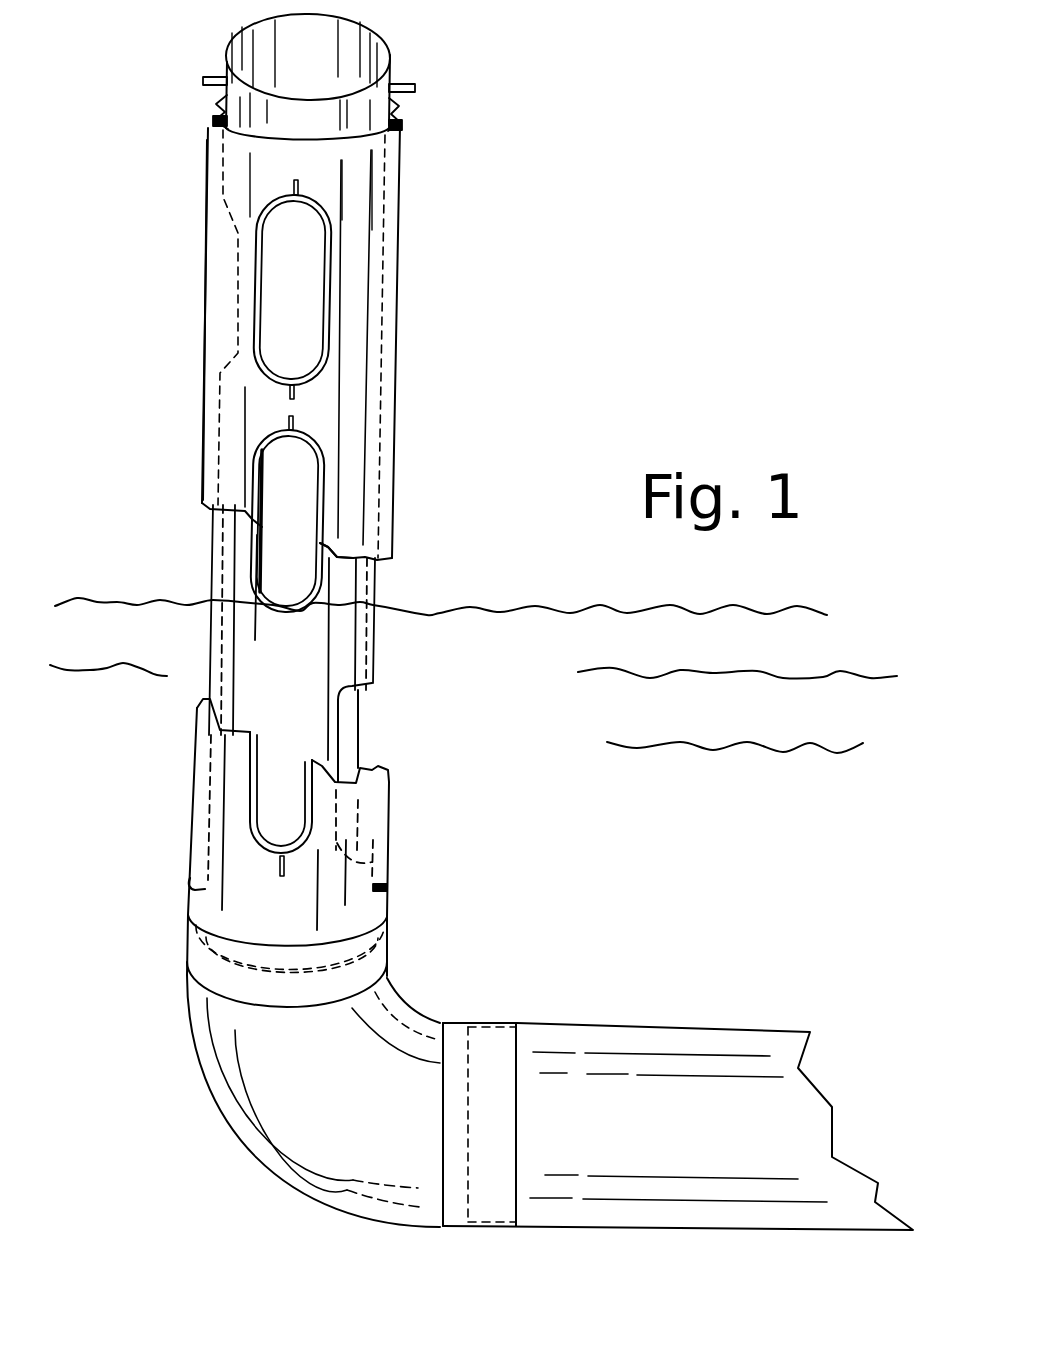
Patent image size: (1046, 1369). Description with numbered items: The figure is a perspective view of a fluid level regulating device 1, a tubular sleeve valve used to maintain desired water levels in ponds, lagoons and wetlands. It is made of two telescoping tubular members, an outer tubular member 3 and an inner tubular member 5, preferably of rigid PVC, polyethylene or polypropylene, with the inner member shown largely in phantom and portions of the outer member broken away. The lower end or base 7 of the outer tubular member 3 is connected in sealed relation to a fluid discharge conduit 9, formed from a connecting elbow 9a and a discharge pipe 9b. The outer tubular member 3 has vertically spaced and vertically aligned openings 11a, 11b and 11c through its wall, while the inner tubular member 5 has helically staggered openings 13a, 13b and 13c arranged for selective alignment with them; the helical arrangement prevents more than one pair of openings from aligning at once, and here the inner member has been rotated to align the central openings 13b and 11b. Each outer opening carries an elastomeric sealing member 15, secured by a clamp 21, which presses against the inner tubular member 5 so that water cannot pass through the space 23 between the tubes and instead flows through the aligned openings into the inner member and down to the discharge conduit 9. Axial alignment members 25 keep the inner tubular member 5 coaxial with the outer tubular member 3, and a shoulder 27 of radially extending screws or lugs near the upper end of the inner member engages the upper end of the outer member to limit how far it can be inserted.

The fluid level regulating device 1 is at (555, 360).
The outer tubular member 3 is at (392, 530).
The inner tubular member 5 is at (208, 553).
The base 7 is at (338, 922).
The fluid discharge conduit 9 is at (550, 1024).
The connecting elbow 9a is at (408, 1000).
The discharge pipe 9b is at (675, 1025).
The opening 11a is at (300, 223).
The opening 11b is at (300, 468).
The opening 11c is at (260, 757).
The opening 13a is at (238, 235).
The opening 13b is at (323, 580).
The opening 13c is at (360, 727).
The sealing member 15 is at (327, 275).
The clamp 21 is at (296, 392).
The space 23 is at (203, 780).
The axial alignment members 25 is at (216, 112).
The shoulder 27 is at (222, 72).